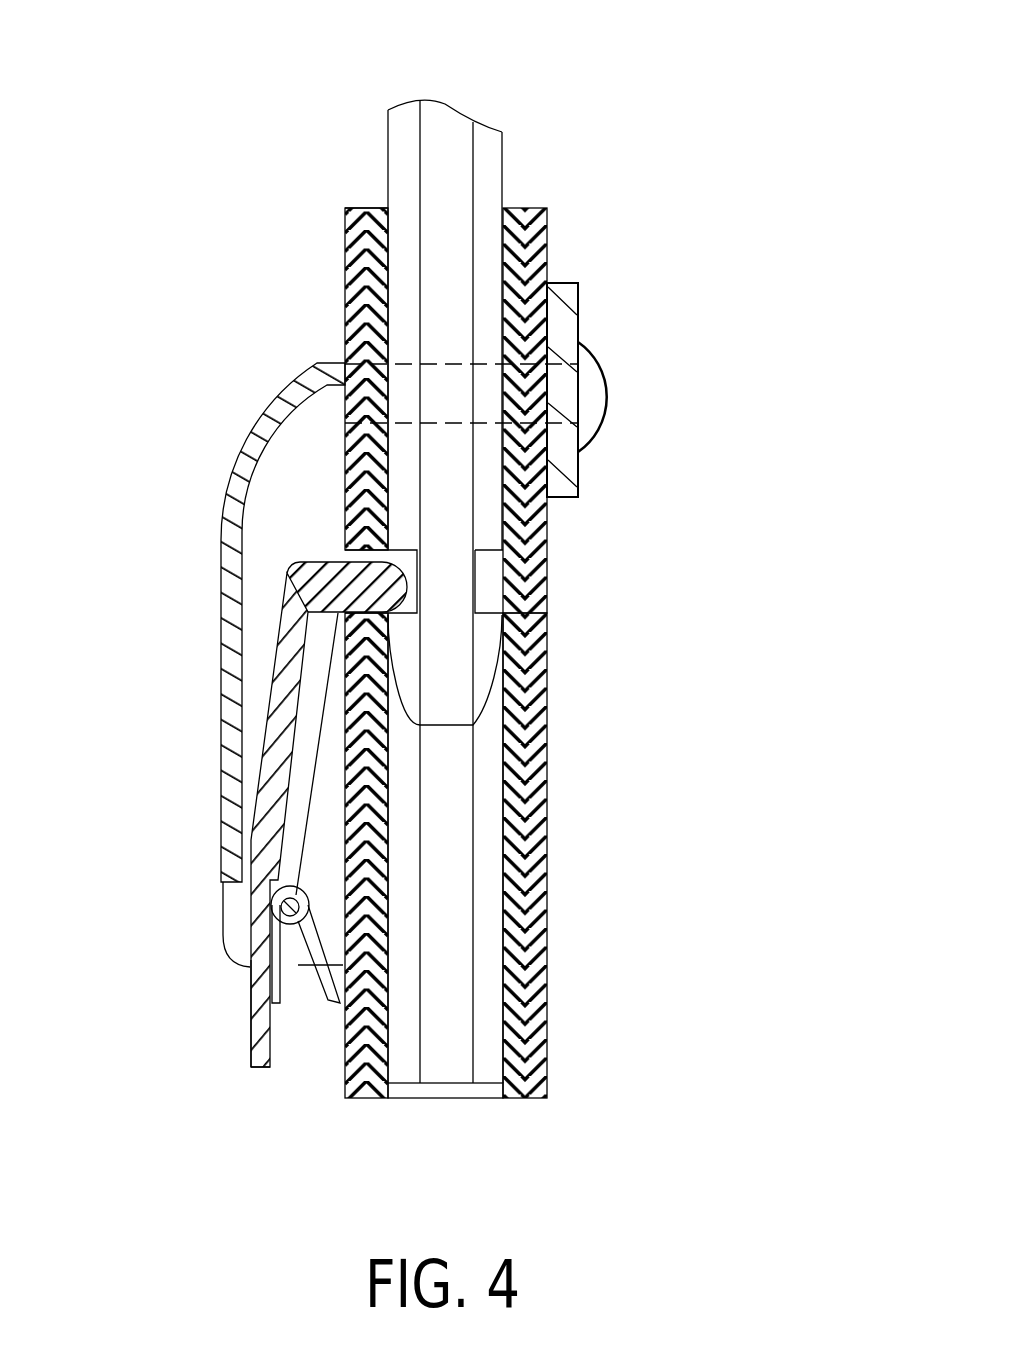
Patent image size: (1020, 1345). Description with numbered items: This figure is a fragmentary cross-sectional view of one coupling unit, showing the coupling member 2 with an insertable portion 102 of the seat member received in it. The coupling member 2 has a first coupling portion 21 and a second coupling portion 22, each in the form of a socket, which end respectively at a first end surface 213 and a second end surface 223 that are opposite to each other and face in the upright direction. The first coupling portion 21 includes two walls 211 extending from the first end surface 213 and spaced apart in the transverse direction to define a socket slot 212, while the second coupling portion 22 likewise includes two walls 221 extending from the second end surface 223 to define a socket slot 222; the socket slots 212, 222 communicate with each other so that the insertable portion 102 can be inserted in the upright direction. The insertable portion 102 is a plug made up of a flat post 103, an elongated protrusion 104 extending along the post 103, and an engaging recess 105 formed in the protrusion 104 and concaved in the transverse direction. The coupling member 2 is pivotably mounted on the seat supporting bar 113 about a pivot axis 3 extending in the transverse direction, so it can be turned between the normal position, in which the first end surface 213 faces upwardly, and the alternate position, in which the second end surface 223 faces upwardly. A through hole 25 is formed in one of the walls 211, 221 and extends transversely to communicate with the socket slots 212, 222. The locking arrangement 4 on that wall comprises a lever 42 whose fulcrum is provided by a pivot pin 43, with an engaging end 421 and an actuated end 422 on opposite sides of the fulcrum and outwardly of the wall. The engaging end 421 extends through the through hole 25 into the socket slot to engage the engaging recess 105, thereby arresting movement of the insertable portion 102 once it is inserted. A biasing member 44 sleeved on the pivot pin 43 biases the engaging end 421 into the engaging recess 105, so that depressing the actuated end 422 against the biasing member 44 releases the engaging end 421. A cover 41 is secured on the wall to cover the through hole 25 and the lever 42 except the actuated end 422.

The coupling member 2 is at (572, 194).
The first coupling portion 21 is at (343, 207).
The walls 211 is at (538, 248).
The socket slot 212 is at (378, 291).
The first end surface 213 is at (524, 207).
The second coupling portion 22 is at (555, 867).
The walls 221 is at (540, 945).
The socket slot 222 is at (490, 958).
The second end surface 223 is at (520, 1098).
The insertable portion 102 is at (487, 120).
The flat post 103 is at (410, 244).
The elongated protrusion 104 is at (452, 165).
The engaging recess 105 is at (420, 552).
The seat supporting bar 113 is at (562, 330).
The pivot axis 3 is at (593, 402).
The through hole 25 is at (348, 548).
The release lever assembly 4 is at (140, 1022).
The cover 41 is at (227, 828).
The lever 42 is at (260, 790).
The engaging end 421 is at (387, 585).
The actuated end 422 is at (255, 1040).
The pivot pin 43 is at (283, 903).
The biasing member 44 is at (333, 980).